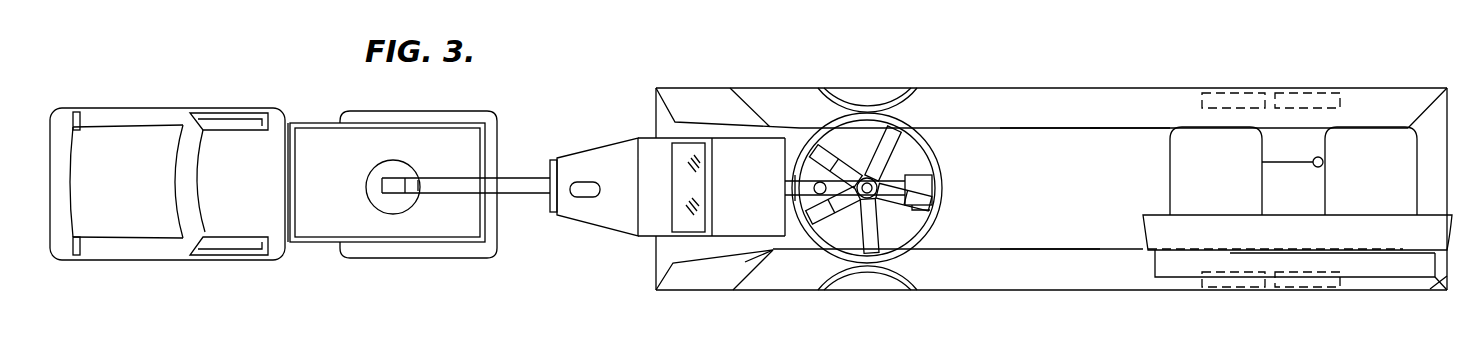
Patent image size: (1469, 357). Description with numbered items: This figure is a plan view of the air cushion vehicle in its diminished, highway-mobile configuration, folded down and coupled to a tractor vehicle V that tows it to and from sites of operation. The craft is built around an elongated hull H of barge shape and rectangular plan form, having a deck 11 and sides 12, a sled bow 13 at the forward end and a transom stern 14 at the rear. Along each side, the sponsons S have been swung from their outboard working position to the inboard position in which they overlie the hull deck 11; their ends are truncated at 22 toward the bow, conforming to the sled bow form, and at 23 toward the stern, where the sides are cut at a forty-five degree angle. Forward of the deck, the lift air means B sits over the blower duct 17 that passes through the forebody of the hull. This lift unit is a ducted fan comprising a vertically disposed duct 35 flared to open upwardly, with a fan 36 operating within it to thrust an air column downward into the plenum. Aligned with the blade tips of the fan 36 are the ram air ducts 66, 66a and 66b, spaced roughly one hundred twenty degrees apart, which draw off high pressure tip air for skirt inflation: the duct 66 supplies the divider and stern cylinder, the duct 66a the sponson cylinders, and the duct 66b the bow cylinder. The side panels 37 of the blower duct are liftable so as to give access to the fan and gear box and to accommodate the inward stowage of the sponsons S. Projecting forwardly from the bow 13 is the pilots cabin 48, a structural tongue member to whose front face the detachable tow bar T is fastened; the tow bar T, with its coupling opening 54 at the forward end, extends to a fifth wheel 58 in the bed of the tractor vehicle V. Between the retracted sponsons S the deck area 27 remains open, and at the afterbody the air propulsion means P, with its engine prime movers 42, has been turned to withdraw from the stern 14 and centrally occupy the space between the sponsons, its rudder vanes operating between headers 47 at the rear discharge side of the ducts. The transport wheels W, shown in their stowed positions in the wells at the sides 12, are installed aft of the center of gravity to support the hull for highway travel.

The tractor vehicle V is at (349, 108).
The fifth wheel 58 is at (398, 178).
The tow bar T is at (532, 182).
The coupler slot 54 is at (607, 174).
The sled bow 13 is at (656, 263).
The sides 12 is at (1174, 88).
The sponsons S is at (1101, 103).
The stern truncation 23 is at (1432, 108).
The headers 47 is at (1361, 277).
The transom stern 14 is at (1445, 292).
The pilots cabin 48 is at (711, 187).
The ram air duct 66b is at (808, 181).
The ram air duct 66a is at (812, 197).
The blower duct 17 is at (922, 148).
The lift air means B is at (945, 212).
The duct 35 is at (869, 181).
The fan 36 is at (881, 236).
The ram air duct 66 is at (931, 186).
The side panels 37 is at (840, 91).
The hull H is at (1050, 152).
The deck 11 is at (1050, 212).
The inner rail 27 is at (1103, 128).
The air propulsion means P is at (1258, 187).
The engine prime mover 42 is at (1323, 263).
The transport wheels W is at (1286, 92).
The bow truncation 22 is at (744, 272).